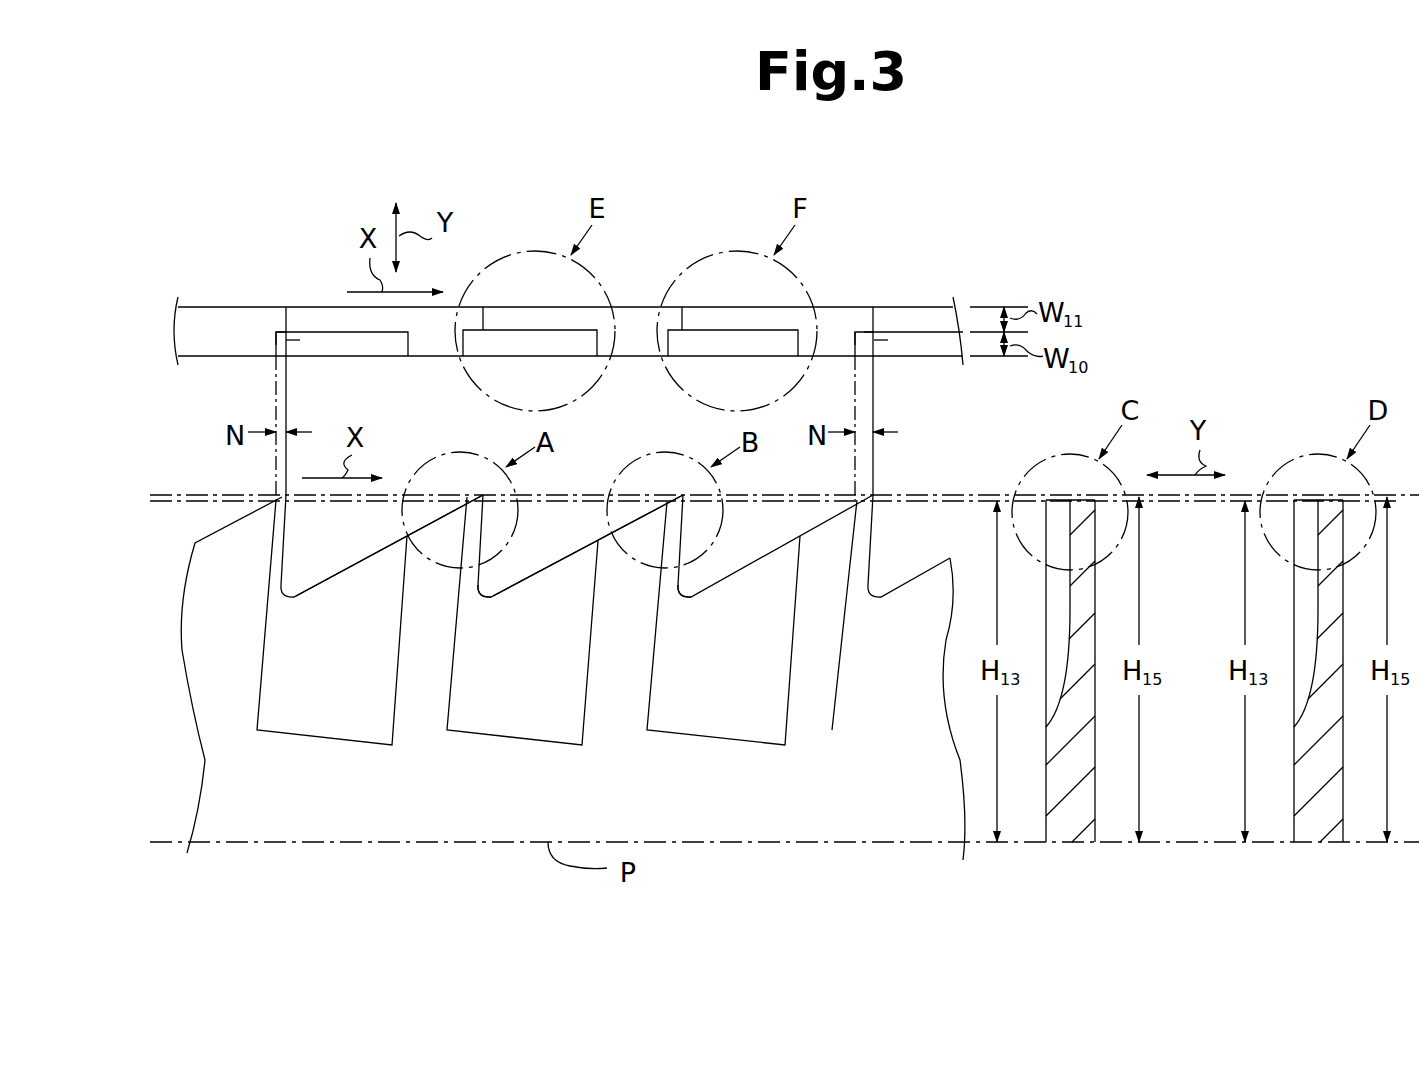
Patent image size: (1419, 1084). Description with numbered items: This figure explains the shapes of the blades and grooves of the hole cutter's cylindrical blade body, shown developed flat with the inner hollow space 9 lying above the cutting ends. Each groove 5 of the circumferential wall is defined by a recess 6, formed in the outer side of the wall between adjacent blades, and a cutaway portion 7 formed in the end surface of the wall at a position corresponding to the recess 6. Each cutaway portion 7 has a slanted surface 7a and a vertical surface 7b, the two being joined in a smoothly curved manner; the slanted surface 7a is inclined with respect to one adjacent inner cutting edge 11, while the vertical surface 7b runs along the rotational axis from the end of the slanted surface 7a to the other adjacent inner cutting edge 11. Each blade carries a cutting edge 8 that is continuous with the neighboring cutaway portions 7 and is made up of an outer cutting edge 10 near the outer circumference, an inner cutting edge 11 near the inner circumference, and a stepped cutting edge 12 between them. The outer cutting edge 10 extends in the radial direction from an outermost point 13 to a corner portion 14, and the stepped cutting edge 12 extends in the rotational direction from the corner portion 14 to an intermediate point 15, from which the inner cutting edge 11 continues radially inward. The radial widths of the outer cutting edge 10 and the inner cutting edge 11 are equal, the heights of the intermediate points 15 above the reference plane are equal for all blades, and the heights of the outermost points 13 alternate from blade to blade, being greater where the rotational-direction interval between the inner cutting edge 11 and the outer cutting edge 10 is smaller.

The groove 5 is at (762, 677).
The recess 6 is at (517, 727).
The cutaway portion 7 is at (487, 600).
The slanted surface 7a is at (547, 562).
The vertical surface 7b is at (480, 538).
The cutting edge 8 is at (286, 305).
The inner hollow space 9 is at (636, 307).
The outer cutting edge 10 is at (276, 356).
The inner cutting edge 11 is at (288, 330).
The stepped cutting edge 12 is at (286, 330).
The outermost point 13 is at (292, 356).
The corner portion 14 is at (276, 340).
The intermediate point 15 is at (290, 335).